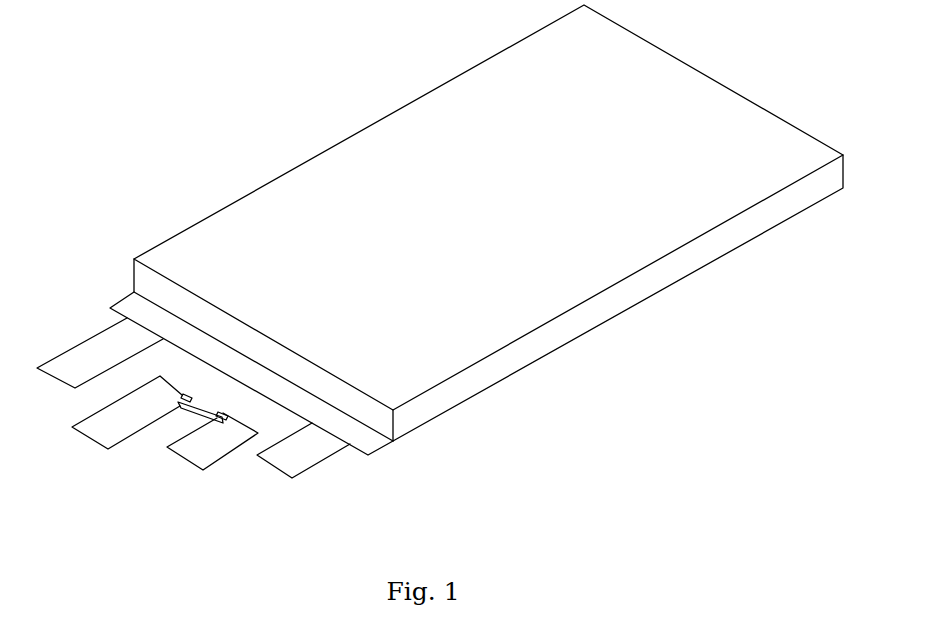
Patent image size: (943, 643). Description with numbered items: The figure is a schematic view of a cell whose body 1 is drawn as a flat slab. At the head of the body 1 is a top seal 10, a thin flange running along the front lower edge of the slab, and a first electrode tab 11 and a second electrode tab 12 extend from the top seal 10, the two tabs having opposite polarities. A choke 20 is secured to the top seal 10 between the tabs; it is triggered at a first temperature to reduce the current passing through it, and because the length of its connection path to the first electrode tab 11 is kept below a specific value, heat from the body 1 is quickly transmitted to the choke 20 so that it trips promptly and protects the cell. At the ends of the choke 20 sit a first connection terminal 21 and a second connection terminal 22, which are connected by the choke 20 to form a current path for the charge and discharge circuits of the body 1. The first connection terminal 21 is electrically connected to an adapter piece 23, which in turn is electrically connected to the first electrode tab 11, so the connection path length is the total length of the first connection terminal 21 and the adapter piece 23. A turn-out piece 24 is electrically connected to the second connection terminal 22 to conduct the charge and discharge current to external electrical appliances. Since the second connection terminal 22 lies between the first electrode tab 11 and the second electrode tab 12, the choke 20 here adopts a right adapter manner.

The body 1 is at (281, 190).
The top seal 10 is at (130, 307).
The first electrode tab 11 is at (307, 458).
The second electrode tab 12 is at (75, 355).
The choke 20 is at (203, 410).
The first connection terminal 21 is at (227, 418).
The second connection terminal 22 is at (190, 392).
The adapter piece 23 is at (193, 457).
The turn-out piece 24 is at (80, 430).